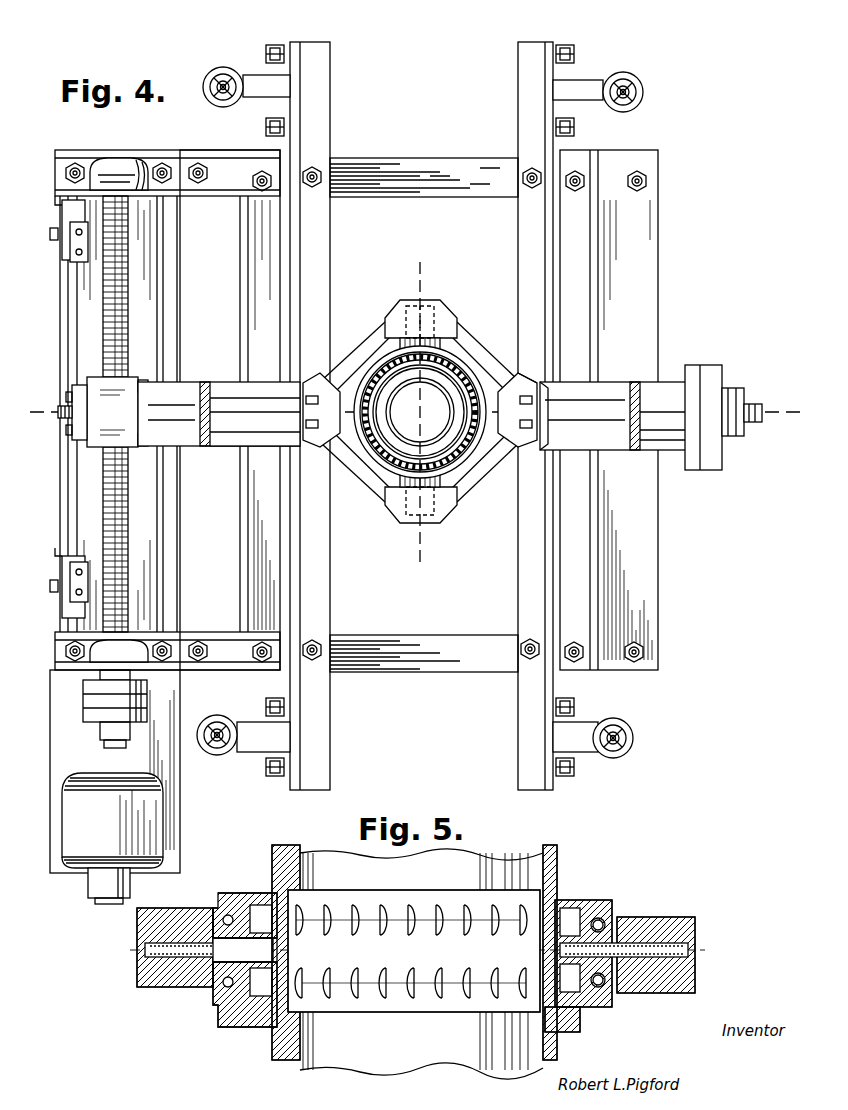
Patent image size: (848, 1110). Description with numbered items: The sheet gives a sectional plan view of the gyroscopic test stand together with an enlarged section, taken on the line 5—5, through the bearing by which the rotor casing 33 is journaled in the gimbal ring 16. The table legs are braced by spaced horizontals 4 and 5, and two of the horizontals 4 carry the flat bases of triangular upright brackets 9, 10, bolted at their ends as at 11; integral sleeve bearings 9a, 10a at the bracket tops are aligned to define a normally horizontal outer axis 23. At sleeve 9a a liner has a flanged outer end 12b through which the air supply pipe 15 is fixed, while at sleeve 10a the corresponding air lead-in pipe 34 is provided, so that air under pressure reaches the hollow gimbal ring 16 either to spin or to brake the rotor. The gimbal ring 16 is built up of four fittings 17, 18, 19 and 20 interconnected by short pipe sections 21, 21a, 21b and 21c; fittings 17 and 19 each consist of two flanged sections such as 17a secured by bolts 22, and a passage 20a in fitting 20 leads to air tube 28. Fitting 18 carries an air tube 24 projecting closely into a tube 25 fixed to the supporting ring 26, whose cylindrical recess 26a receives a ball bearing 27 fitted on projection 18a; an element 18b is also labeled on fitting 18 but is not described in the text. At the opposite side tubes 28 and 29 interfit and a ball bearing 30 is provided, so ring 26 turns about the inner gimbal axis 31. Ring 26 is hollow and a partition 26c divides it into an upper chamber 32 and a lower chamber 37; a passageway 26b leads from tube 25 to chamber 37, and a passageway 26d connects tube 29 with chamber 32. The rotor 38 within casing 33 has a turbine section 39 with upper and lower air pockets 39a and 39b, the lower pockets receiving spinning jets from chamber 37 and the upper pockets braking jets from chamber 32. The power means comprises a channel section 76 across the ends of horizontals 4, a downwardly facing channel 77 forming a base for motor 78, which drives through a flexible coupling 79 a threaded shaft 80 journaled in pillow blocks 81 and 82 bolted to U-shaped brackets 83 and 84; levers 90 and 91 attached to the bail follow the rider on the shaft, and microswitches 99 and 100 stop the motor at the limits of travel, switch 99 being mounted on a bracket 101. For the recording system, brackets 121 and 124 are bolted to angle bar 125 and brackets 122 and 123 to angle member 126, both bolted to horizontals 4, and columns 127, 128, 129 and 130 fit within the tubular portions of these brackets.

In FIG. 4, the horizontal brace member 4 is at (368, 170).
In FIG. 4, the horizontal brace member 5 is at (445, 260).
In FIG. 4, the upright bracket 9 is at (598, 316).
In FIG. 4, the sleeve bearing 9a is at (612, 392).
In FIG. 4, the upright bracket 10 is at (240, 316).
In FIG. 5, the upright bracket 10 is at (117, 997).
In FIG. 4, the sleeve bearing 10a is at (223, 448).
In FIG. 4, the bolts 11 is at (262, 190).
In FIG. 4, the flanged outer end of liner 12b is at (732, 395).
In FIG. 4, the air supply pipe 15 is at (755, 410).
In FIG. 4, the gimbal ring 16 is at (481, 333).
In FIG. 4, the fitting 17 is at (507, 462).
In FIG. 4, the flanged fitting section 17a is at (519, 385).
In FIG. 4, the fitting 18 is at (396, 312).
In FIG. 5, the fitting 18 is at (158, 986).
In FIG. 5, the projection of fitting 18 18a is at (216, 912).
In FIG. 4, the dowel 18b is at (430, 312).
In FIG. 4, the fitting 19 is at (320, 440).
In FIG. 4, the fitting 20 is at (448, 520).
In FIG. 5, the fitting 20 is at (692, 928).
In FIG. 4, the passage 20a is at (405, 522).
In FIG. 4, the pipe section 21 is at (488, 362).
In FIG. 4, the pipe section 21a is at (370, 340).
In FIG. 4, the pipe section 21b is at (374, 496).
In FIG. 4, the pipe section 21c is at (470, 485).
In FIG. 4, the bolts 22 is at (418, 409).
In FIG. 4, the outer horizontal axis 23 is at (246, 420).
In FIG. 5, the air tube 24 is at (158, 942).
In FIG. 5, the tube 25 is at (204, 981).
In FIG. 4, the supporting ring 26 is at (374, 447).
In FIG. 5, the supporting ring 26 is at (237, 895).
In FIG. 5, the cylindrical recess 26a is at (246, 1002).
In FIG. 5, the passageway 26b is at (290, 952).
In FIG. 5, the partition 26c is at (573, 986).
In FIG. 5, the passageway 26d is at (573, 921).
In FIG. 5, the ball bearing 27 is at (230, 988).
In FIG. 5, the air tube 28 is at (688, 970).
In FIG. 5, the air tube 29 is at (637, 940).
In FIG. 5, the ball bearing 30 is at (614, 908).
In FIG. 4, the inner gimbal ring axis 31 is at (423, 412).
In FIG. 5, the inner gimbal ring axis 31 is at (403, 944).
In FIG. 5, the upper annular chamber 32 is at (572, 905).
In FIG. 4, the rotor casing 33 is at (390, 384).
In FIG. 5, the rotor casing 33 is at (557, 868).
In FIG. 4, the air lead-in pipe 34 is at (60, 408).
In FIG. 5, the lower annular chamber 37 is at (582, 1022).
In FIG. 4, the rotor 38 is at (442, 450).
In FIG. 5, the rotor 38 is at (319, 858).
In FIG. 5, the turbine section 39 is at (360, 1003).
In FIG. 5, the upper air pockets 39a is at (414, 900).
In FIG. 5, the lower air pockets 39b is at (462, 995).
In FIG. 4, the channel section 76 is at (60, 487).
In FIG. 4, the channel section 77 is at (176, 787).
In FIG. 4, the motor 78 is at (166, 828).
In FIG. 4, the flexible coupling 79 is at (86, 702).
In FIG. 4, the threaded shaft 80 is at (122, 292).
In FIG. 4, the pillow block 81 is at (140, 670).
In FIG. 4, the pillow block 82 is at (128, 160).
In FIG. 4, the U-shaped bracket 83 is at (57, 553).
In FIG. 4, the U-shaped bracket 84 is at (56, 203).
In FIG. 4, the lever 90 is at (90, 412).
In FIG. 4, the lever 91 is at (146, 390).
In FIG. 4, the microswitch 99 is at (75, 252).
In FIG. 4, the microswitch 100 is at (72, 578).
In FIG. 4, the switch bracket 101 is at (63, 213).
In FIG. 4, the bracket 121 is at (248, 748).
In FIG. 4, the bracket 122 is at (588, 747).
In FIG. 4, the bracket 123 is at (596, 81).
In FIG. 4, the bracket 124 is at (251, 76).
In FIG. 4, the angle bar 125 is at (318, 262).
In FIG. 4, the angle member 126 is at (525, 592).
In FIG. 4, the column 127 is at (219, 723).
In FIG. 4, the column 128 is at (634, 738).
In FIG. 4, the column 129 is at (641, 94).
In FIG. 4, the column 130 is at (228, 98).